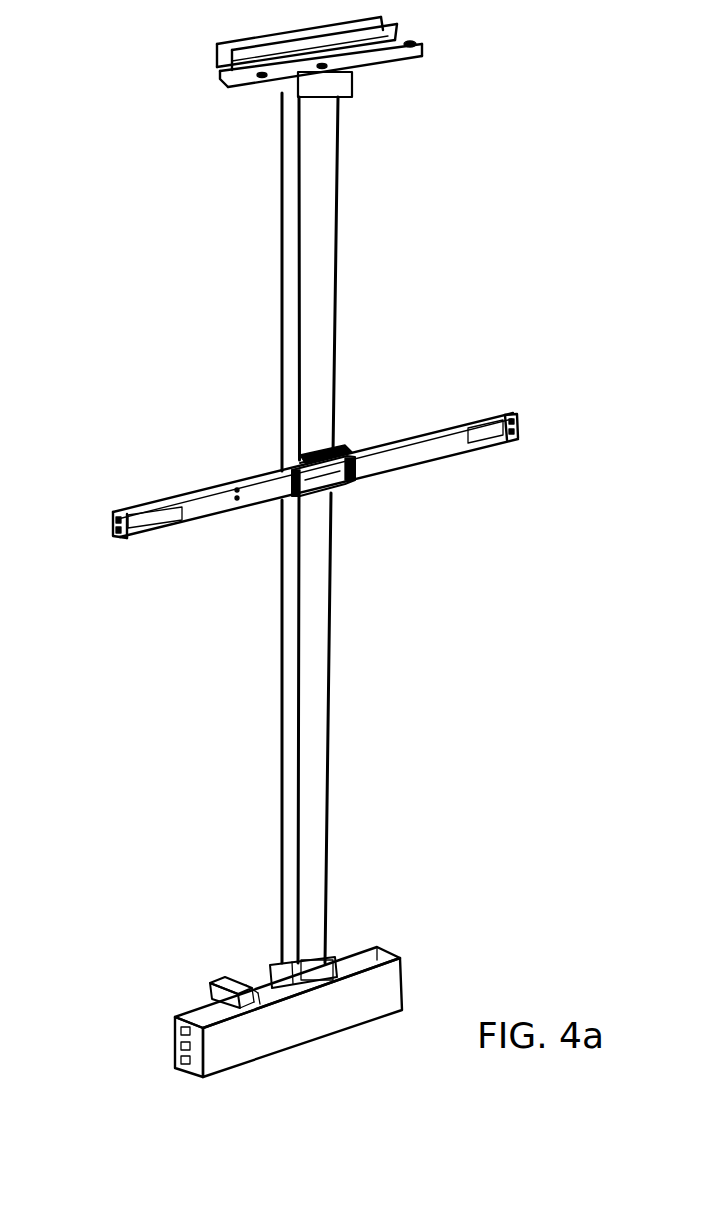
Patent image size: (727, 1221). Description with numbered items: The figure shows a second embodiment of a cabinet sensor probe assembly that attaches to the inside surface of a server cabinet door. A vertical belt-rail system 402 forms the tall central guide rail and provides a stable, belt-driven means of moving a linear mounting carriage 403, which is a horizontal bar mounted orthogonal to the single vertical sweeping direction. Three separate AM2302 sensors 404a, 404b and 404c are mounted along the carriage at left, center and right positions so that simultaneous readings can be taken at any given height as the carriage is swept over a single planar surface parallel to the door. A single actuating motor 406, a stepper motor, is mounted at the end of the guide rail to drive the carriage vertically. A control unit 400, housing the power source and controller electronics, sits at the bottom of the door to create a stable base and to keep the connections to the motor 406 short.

The control unit 400 is at (367, 1000).
The vertical belt-rail system 402 is at (318, 263).
The linear mounting carriage 403 is at (393, 458).
The sensor 404a is at (160, 497).
The sensor 404b is at (310, 460).
The sensor 404c is at (497, 412).
The actuating motor 406 is at (225, 977).